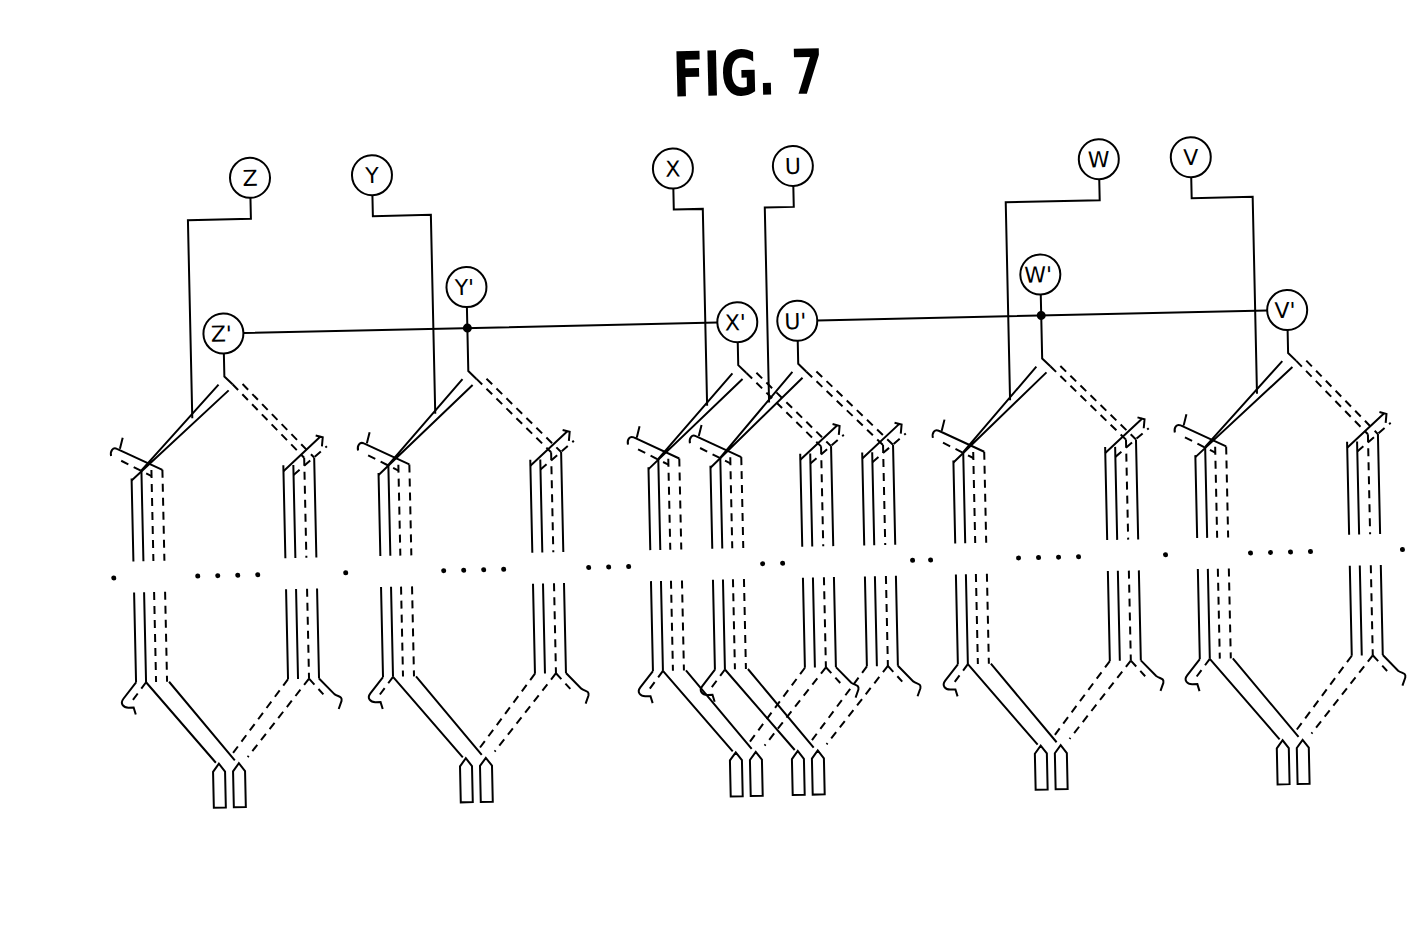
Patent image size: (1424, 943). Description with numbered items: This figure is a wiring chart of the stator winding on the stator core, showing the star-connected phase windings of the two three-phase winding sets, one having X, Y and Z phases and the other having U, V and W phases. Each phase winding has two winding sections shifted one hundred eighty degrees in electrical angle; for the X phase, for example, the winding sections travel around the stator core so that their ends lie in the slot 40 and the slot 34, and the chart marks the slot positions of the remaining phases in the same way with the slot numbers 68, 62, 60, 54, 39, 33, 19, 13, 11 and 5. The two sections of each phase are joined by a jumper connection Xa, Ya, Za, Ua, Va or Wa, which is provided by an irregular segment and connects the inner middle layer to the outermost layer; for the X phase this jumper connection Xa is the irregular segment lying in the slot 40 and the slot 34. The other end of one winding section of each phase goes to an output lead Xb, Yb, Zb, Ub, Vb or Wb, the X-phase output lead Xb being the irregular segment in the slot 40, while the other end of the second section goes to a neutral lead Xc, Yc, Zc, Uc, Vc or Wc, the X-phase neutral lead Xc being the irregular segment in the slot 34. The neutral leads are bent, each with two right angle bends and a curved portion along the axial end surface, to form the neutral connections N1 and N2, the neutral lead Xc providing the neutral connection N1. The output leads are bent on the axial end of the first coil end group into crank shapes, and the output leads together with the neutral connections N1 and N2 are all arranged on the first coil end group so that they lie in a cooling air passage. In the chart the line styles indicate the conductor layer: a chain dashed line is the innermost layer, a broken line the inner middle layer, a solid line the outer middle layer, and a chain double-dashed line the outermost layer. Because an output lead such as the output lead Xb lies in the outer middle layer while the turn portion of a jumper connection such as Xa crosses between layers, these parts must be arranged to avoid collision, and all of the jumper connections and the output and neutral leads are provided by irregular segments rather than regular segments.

The jumper connection Za is at (174, 411).
The output lead Zb is at (195, 239).
The neutral lead Zc is at (250, 386).
The jumper connection Ya is at (432, 402).
The output lead Yb is at (437, 274).
The neutral lead Yc is at (503, 399).
The jumper connection Xa is at (683, 423).
The output lead Xb is at (707, 247).
The neutral lead Xc is at (787, 418).
The jumper connection Ua is at (749, 398).
The output lead Ub is at (769, 231).
The neutral lead Uc is at (828, 391).
The jumper connection Wa is at (978, 409).
The output lead Wb is at (1010, 270).
The neutral lead Wc is at (1072, 393).
The jumper connection Va is at (1248, 409).
The output lead Vb is at (1260, 222).
The neutral lead Vc is at (1335, 397).
The neutral connection N1 is at (472, 320).
The neutral connection N2 is at (1046, 321).
The slot 68 is at (146, 575).
The slot 62 is at (307, 572).
The slot 60 is at (394, 570).
The slot 54 is at (552, 567).
The 40th slot 40 is at (664, 564).
The slot 39 is at (724, 563).
The 34th slot 34 is at (823, 561).
The slot 33 is at (884, 559).
The slot 19 is at (970, 557).
The slot 13 is at (1128, 554).
The slot 11 is at (1208, 552).
The slot 5 is at (1375, 549).